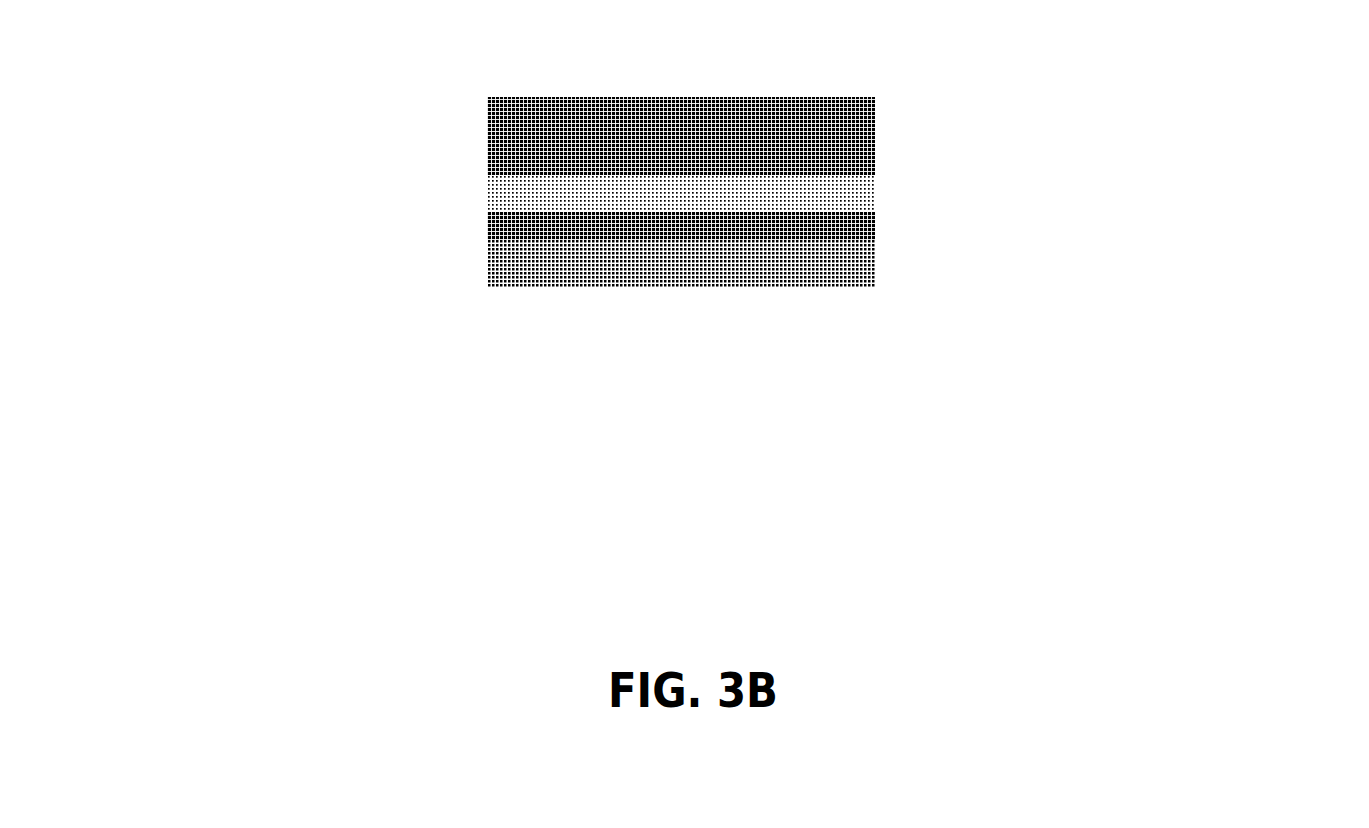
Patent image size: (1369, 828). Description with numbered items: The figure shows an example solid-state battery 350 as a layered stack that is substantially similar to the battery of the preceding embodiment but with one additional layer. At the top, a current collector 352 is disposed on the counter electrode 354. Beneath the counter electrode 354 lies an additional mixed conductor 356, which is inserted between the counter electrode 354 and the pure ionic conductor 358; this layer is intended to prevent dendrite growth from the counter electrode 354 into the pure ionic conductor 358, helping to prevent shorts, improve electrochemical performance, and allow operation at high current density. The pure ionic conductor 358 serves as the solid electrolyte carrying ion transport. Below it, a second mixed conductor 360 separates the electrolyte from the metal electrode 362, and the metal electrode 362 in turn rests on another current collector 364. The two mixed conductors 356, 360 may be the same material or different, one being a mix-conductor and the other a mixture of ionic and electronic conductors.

The solid-state battery 350 is at (681, 160).
The current collector 352 is at (487, 97).
The counter electrode 354 is at (875, 125).
The mixed conductor 356 is at (487, 158).
The pure ionic conductor 358 is at (875, 195).
The mixed conductor 360 is at (487, 228).
The metal electrode 362 is at (875, 263).
The current collector 364 is at (487, 287).